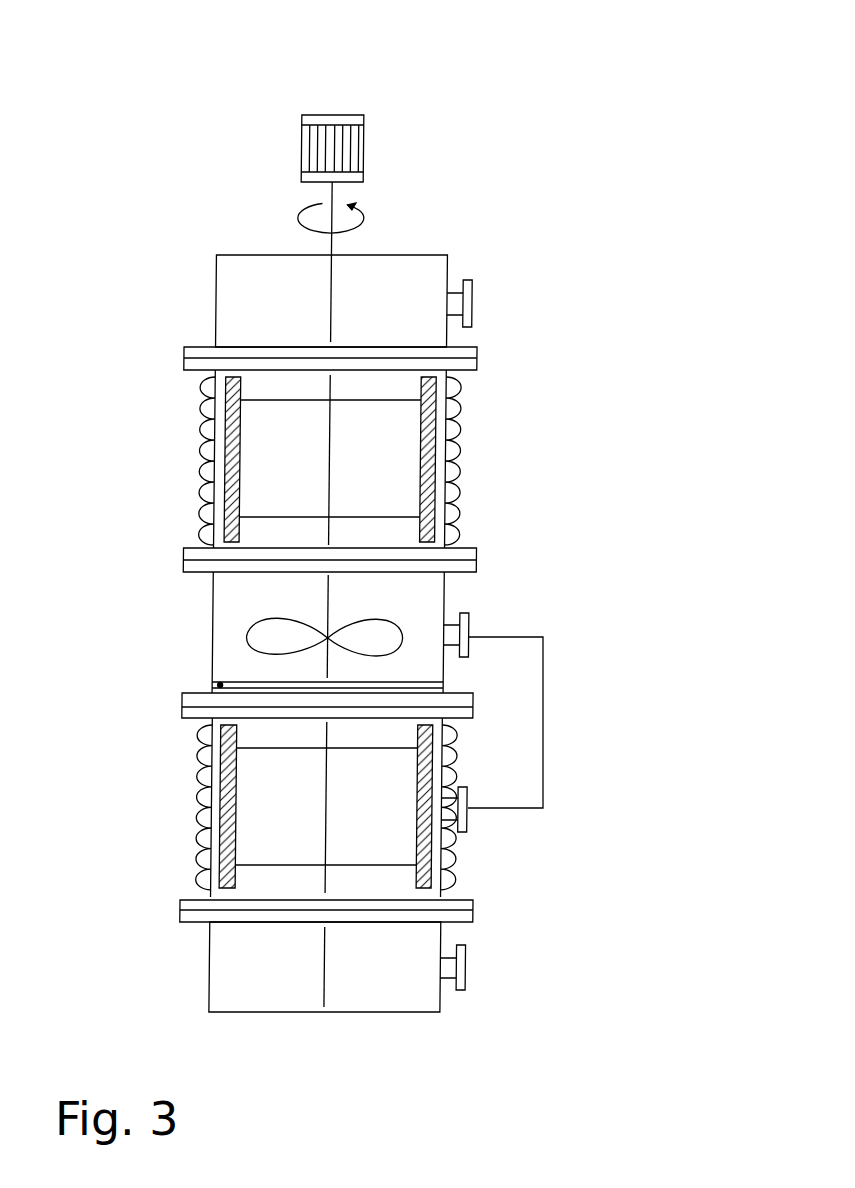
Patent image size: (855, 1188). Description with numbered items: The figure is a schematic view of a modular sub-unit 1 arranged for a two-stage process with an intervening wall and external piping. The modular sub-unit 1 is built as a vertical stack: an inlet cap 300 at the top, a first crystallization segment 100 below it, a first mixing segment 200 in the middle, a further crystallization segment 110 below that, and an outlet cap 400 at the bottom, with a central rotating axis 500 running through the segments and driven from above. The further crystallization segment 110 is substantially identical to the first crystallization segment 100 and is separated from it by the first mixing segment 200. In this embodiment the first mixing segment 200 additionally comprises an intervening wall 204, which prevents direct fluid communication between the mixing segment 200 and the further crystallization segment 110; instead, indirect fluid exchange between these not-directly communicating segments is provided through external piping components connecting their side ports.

The modular sub-unit 1 is at (493, 110).
The central rotating axis 500 is at (330, 252).
The inlet cap 300 is at (255, 305).
The crystallization segment 100 is at (253, 532).
The mixing segment 200 is at (252, 673).
The intervening wall 204 is at (221, 685).
The further crystallization segment 110 is at (250, 880).
The outlet cap 400 is at (248, 1003).